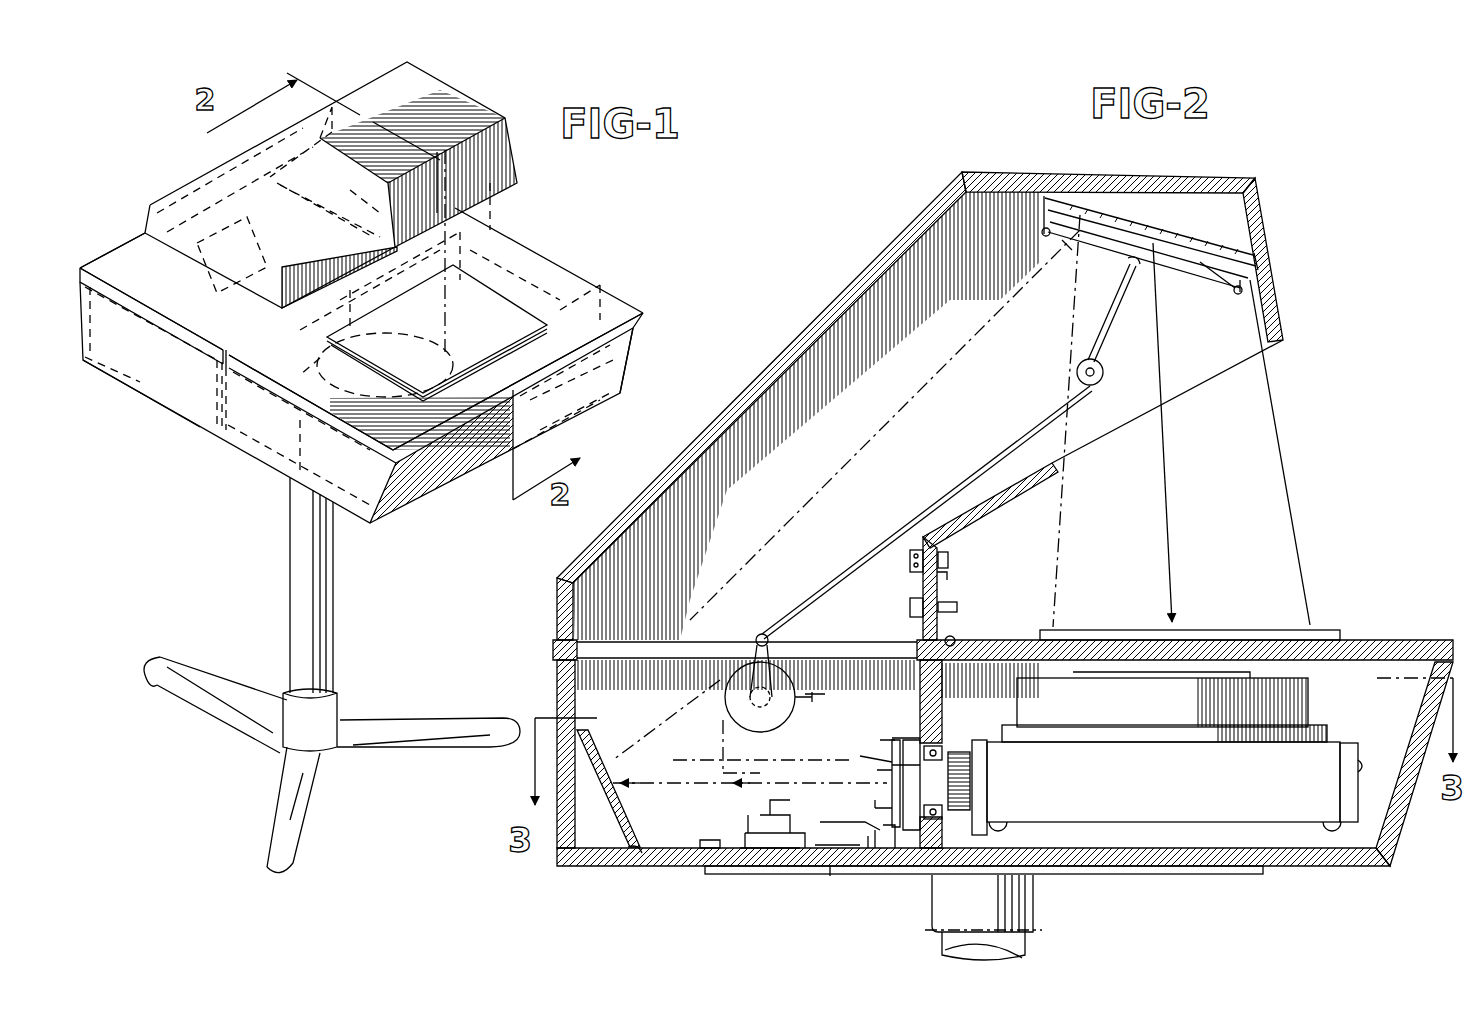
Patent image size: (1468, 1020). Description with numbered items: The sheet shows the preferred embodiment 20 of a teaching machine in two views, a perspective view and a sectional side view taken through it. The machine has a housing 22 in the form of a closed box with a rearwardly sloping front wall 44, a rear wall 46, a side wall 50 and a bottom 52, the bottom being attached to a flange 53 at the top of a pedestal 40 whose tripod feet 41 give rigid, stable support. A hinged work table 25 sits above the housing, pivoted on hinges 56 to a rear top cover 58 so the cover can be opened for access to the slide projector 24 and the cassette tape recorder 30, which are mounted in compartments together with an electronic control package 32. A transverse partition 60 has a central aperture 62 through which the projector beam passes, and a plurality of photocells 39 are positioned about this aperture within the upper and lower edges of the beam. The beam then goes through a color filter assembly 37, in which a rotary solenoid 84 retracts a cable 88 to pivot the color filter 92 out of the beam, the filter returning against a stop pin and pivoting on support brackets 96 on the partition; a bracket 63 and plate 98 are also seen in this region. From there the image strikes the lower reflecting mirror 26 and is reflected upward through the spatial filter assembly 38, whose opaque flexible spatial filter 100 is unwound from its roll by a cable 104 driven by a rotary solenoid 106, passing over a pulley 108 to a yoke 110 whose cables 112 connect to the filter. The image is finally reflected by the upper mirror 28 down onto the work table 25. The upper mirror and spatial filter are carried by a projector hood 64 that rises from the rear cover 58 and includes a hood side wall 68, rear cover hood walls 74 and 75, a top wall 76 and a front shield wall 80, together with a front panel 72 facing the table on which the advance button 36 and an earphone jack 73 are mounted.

In FIG. 1, the preferred embodiment 20 is at (172, 518).
In FIG. 2, the preferred embodiment 20 is at (1340, 382).
In FIG. 1, the housing 22 is at (192, 428).
In FIG. 1, the slide projector 24 is at (285, 447).
In FIG. 2, the slide projector 24 is at (1170, 801).
In FIG. 1, the work table 25 is at (630, 302).
In FIG. 2, the work table 25 is at (1444, 642).
In FIG. 2, the lower reflecting mirror 26 is at (632, 860).
In FIG. 2, the upper mirror 28 is at (1086, 188).
In FIG. 1, the cassette tape recorder 30 is at (596, 388).
In FIG. 1, the electronic control package 32 is at (540, 270).
In FIG. 2, the advance button 36 is at (949, 559).
In FIG. 2, the color filter assembly 37 is at (845, 756).
In FIG. 2, the spatial filter assembly 38 is at (1062, 248).
In FIG. 2, the photocells 39 is at (946, 749).
In FIG. 1, the pedestal 40 is at (330, 616).
In FIG. 2, the pedestal 40 is at (1027, 945).
In FIG. 1, the tripod feet 41 is at (440, 711).
In FIG. 2, the front wall 44 is at (1414, 804).
In FIG. 2, the rear wall 46 is at (554, 695).
In FIG. 1, the side wall 50 is at (112, 376).
In FIG. 2, the bottom 52 is at (1324, 868).
In FIG. 2, the flange 53 is at (1206, 876).
In FIG. 2, the hinges 56 is at (955, 639).
In FIG. 1, the rear top cover 58 is at (109, 266).
In FIG. 2, the rear top cover 58 is at (554, 637).
In FIG. 2, the partition 60 is at (901, 664).
In FIG. 2, the aperture 62 is at (1360, 728).
In FIG. 2, the bracket 63 is at (864, 759).
In FIG. 1, the projector hood 64 is at (205, 162).
In FIG. 2, the projector hood 64 is at (801, 304).
In FIG. 2, the hood side wall 68 is at (930, 462).
In FIG. 2, the front panel 72 is at (949, 581).
In FIG. 2, the earphone jack 73 is at (958, 605).
In FIG. 2, the rear cover hood wall 74 is at (766, 364).
In FIG. 2, the rear cover hood wall 75 is at (552, 587).
In FIG. 2, the top wall 76 is at (1170, 179).
In FIG. 2, the front shield wall 80 is at (1272, 270).
In FIG. 2, the rotary solenoid 84 is at (745, 838).
In FIG. 2, the cable 88 is at (835, 874).
In FIG. 2, the color filter 92 is at (890, 752).
In FIG. 2, the stop pin / support brackets 96 is at (870, 874).
In FIG. 2, the partition wall 98 is at (905, 740).
In FIG. 2, the spatial filter 100 is at (1208, 290).
In FIG. 2, the cable 104 is at (899, 542).
In FIG. 2, the rotary solenoid 106 is at (732, 696).
In FIG. 2, the pulley 108 is at (1105, 375).
In FIG. 2, the yoke 110 is at (1180, 272).
In FIG. 2, the cables 112 is at (1040, 223).